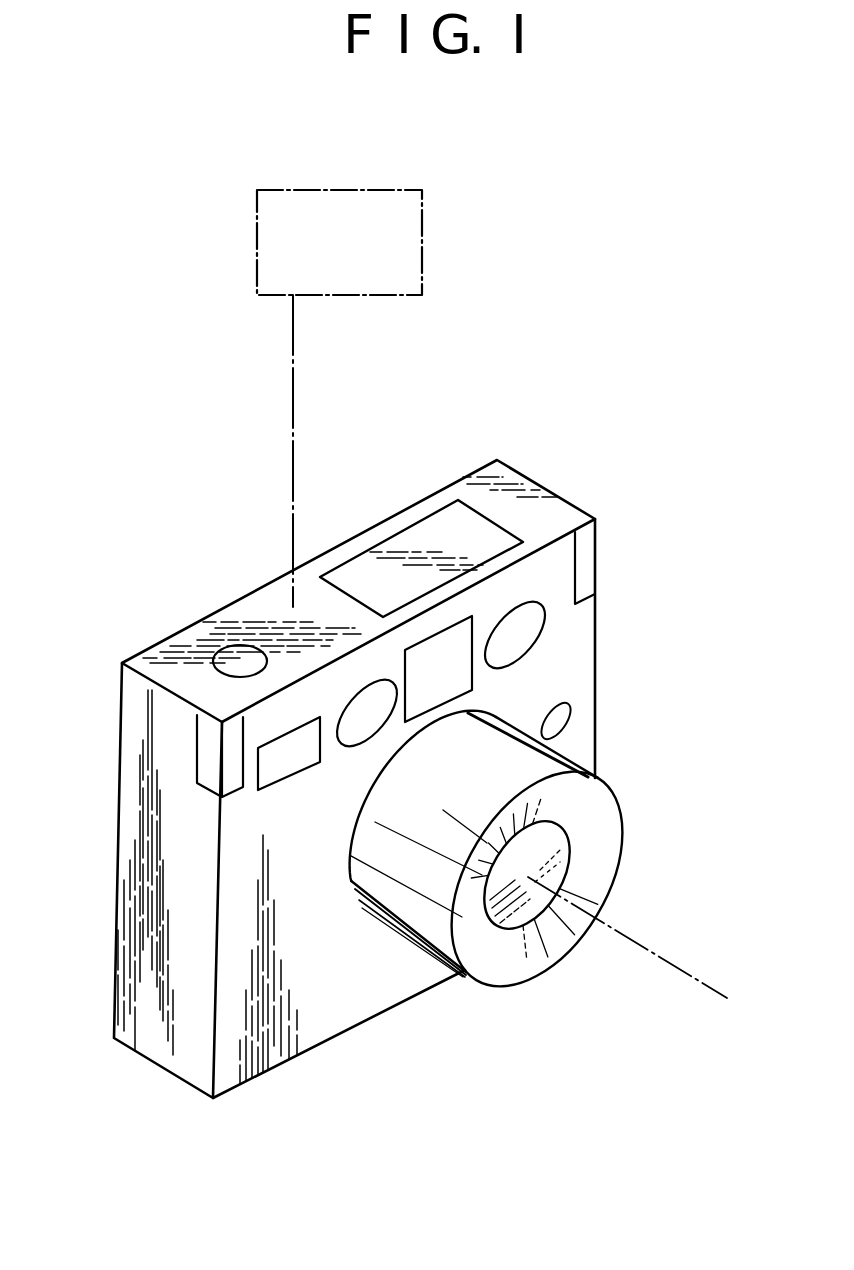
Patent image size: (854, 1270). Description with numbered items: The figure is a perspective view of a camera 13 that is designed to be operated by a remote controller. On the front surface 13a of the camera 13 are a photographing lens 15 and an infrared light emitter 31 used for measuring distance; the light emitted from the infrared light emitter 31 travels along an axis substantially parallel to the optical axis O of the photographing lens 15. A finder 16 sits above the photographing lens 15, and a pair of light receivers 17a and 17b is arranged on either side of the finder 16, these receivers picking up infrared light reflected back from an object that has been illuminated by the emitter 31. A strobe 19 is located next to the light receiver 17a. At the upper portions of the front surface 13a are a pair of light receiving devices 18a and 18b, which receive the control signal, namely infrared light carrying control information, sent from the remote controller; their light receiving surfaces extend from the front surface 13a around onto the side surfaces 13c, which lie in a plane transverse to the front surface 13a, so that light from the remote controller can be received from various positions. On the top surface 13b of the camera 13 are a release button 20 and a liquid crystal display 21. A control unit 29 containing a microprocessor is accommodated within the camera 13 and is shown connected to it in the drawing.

The camera 13 is at (337, 778).
The front surface 13a is at (318, 1023).
The top surface 13b is at (162, 655).
The side surfaces 13c is at (137, 883).
The photographing lens 15 is at (420, 940).
The finder 16 is at (461, 667).
The light receiver 17a is at (352, 735).
The light receiver 17b is at (532, 632).
The light receiving device 18a is at (207, 764).
The light receiving device 18b is at (597, 552).
The strobe 19 is at (280, 766).
The release button 20 is at (241, 655).
The liquid crystal display 21 is at (400, 543).
The control unit 29 is at (422, 244).
The infrared light emitter 31 is at (567, 727).
The optical axis O is at (660, 958).